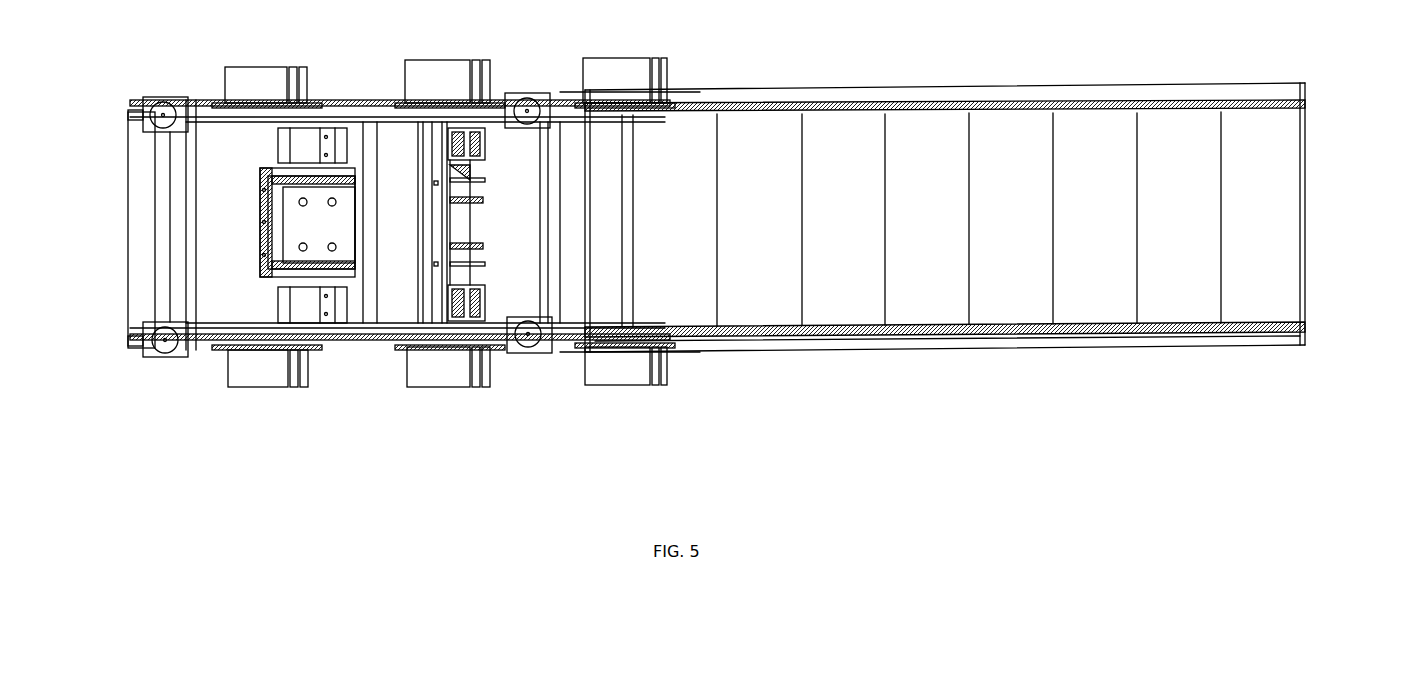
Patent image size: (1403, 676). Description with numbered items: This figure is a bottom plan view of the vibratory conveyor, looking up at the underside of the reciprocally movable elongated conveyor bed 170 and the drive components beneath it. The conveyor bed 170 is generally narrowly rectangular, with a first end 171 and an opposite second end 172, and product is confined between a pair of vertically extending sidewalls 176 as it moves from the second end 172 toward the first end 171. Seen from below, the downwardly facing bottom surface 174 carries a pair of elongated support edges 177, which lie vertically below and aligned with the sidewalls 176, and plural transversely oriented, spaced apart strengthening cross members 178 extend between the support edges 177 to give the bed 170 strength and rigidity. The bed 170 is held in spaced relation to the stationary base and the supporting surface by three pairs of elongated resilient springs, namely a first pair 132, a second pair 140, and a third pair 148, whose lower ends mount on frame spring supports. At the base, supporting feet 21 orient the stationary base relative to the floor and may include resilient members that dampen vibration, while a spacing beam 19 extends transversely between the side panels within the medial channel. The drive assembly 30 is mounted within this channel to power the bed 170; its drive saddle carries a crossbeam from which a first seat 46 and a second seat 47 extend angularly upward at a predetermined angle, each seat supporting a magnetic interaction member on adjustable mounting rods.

The spacing beam 19 is at (410, 234).
The supporting feet 21 is at (165, 95).
The drive assembly 30 is at (279, 225).
The first seat 46 is at (472, 222).
The second seat 47 is at (332, 234).
The first pair of elongated resilient springs 132 is at (620, 78).
The second pair of elongated and resilient springs 140 is at (440, 72).
The third pair of elongated and resilient springs 148 is at (265, 70).
The reciprocally movable elongated conveyor bed 170 is at (976, 215).
The first end 171 is at (1310, 131).
The second end 172 is at (128, 205).
The bottom surface 174 is at (1005, 300).
The vertically extending sidewalls 176 is at (1090, 90).
The elongated support edges 177 is at (770, 93).
The strengthening cross members 178 is at (970, 230).